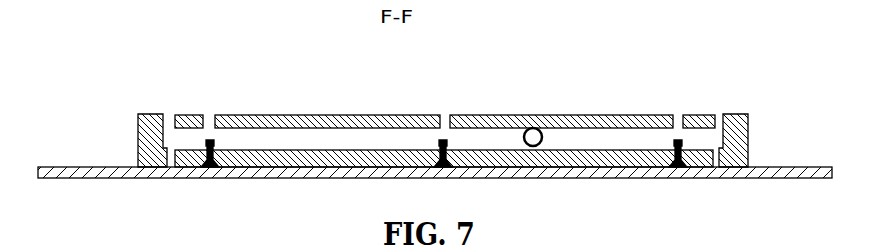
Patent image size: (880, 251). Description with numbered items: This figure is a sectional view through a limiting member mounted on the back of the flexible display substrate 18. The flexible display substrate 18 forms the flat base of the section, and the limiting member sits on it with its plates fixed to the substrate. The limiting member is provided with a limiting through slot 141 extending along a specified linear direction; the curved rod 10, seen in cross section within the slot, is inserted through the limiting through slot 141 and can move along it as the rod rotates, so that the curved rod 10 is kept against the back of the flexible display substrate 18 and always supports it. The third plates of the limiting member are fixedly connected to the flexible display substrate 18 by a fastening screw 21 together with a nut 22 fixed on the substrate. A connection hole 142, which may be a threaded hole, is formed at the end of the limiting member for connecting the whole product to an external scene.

The flexible display substrate 18 is at (63, 165).
The connection hole 142 is at (165, 114).
The limiting through slot 141 is at (292, 136).
The nut 22 is at (450, 147).
The curved rod 10 is at (531, 127).
The fastening screw 21 is at (686, 143).